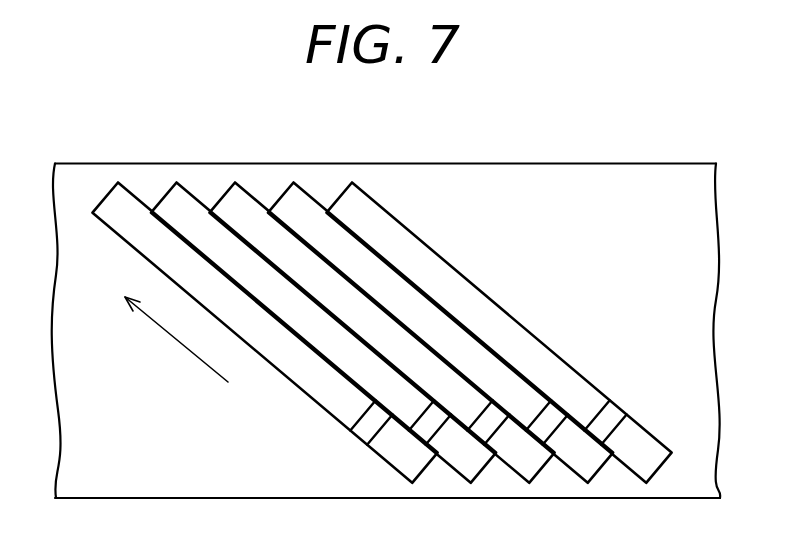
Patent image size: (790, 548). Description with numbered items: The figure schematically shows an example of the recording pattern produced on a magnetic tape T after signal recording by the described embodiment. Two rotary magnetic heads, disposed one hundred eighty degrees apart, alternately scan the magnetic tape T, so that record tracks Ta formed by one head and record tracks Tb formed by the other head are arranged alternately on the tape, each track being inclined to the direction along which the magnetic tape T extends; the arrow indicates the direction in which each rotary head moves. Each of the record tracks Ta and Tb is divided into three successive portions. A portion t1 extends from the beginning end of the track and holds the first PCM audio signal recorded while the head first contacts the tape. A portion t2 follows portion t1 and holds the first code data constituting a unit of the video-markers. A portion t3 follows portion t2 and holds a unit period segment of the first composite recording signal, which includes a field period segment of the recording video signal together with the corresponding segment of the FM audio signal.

The magnetic tape T is at (553, 164).
The record tracks Ta is at (130, 192).
The record tracks Tb is at (188, 192).
The portion t1 is at (463, 457).
The portion t2 is at (427, 417).
The portion t3 is at (342, 352).